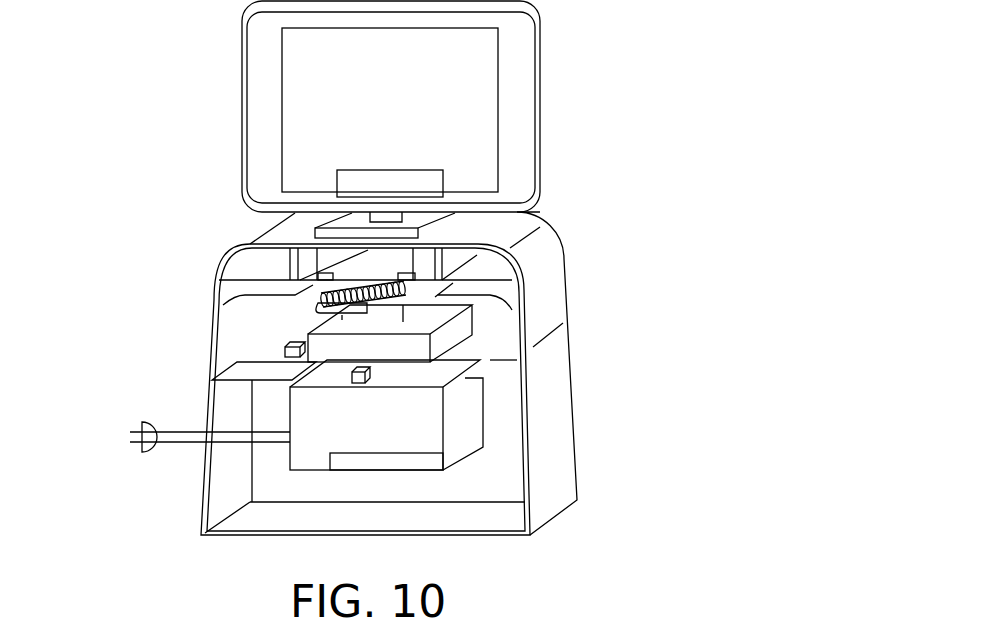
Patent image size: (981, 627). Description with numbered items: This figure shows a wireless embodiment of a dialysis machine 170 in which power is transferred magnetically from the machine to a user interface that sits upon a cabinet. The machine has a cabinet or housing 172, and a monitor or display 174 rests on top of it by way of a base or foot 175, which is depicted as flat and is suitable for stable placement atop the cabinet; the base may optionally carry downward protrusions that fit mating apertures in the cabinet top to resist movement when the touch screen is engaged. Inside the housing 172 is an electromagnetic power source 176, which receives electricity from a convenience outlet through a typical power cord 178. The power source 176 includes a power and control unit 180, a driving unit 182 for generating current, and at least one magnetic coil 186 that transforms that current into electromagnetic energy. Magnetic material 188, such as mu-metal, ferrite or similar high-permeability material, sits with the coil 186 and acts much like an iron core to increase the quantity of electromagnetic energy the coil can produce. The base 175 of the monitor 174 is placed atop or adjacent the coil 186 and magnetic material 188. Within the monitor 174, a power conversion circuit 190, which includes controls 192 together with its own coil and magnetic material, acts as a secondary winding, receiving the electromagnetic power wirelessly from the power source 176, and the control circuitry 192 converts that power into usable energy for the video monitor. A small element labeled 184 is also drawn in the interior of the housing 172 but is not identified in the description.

The dialysis machine 170 is at (612, 502).
The cabinet or housing 172 is at (577, 388).
The monitor or display 174 is at (522, 100).
The base or foot 175 is at (417, 228).
The electromagnetic power source 176 is at (300, 480).
The power cord 178 is at (182, 443).
The power and control unit 180 is at (318, 473).
The driving unit 182 is at (438, 336).
The sensor block 184 is at (283, 350).
The magnetic coil 186 is at (308, 287).
The magnetic material 188 is at (313, 306).
The power conversion circuit 190 is at (330, 157).
The controls 192 is at (422, 168).